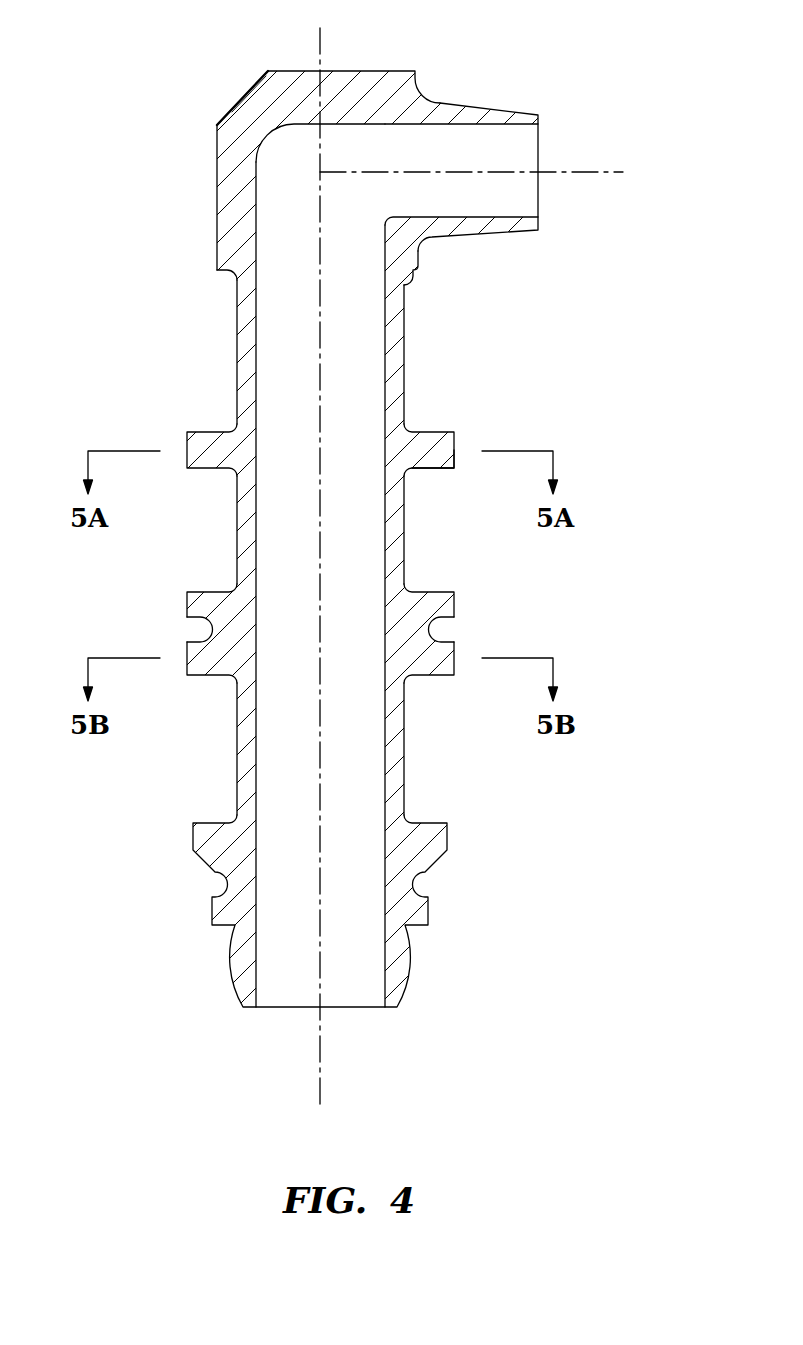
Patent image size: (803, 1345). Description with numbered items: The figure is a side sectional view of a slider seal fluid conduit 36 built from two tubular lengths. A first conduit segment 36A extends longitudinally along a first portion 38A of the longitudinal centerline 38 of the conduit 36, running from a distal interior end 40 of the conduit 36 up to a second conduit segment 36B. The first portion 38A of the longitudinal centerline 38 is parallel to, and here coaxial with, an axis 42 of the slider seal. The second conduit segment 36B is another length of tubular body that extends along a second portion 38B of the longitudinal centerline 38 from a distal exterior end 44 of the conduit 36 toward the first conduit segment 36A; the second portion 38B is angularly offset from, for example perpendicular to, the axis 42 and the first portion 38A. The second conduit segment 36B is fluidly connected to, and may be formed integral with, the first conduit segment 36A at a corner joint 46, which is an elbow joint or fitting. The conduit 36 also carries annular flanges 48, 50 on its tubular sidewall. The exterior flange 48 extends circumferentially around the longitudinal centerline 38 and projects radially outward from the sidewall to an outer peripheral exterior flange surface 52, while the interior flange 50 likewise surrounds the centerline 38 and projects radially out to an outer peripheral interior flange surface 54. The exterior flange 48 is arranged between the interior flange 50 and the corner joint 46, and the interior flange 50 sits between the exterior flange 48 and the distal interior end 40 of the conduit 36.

The slider seal fluid conduit 36 is at (401, 672).
The first conduit segment 36A is at (418, 366).
The second conduit segment 36B is at (339, 142).
The longitudinal centerline 38 is at (439, 593).
The first portion of the longitudinal centerline 38A is at (322, 548).
The second portion of the longitudinal centerline 38B is at (448, 170).
The distal interior end 40 is at (243, 1008).
The axis 42 is at (320, 1106).
The distal exterior end 44 is at (539, 118).
The corner joint 46 is at (240, 101).
The exterior flange 48 is at (449, 427).
The interior flange 50 is at (438, 682).
The exterior flange surface 52 is at (456, 457).
The interior flange surface 54 is at (456, 607).